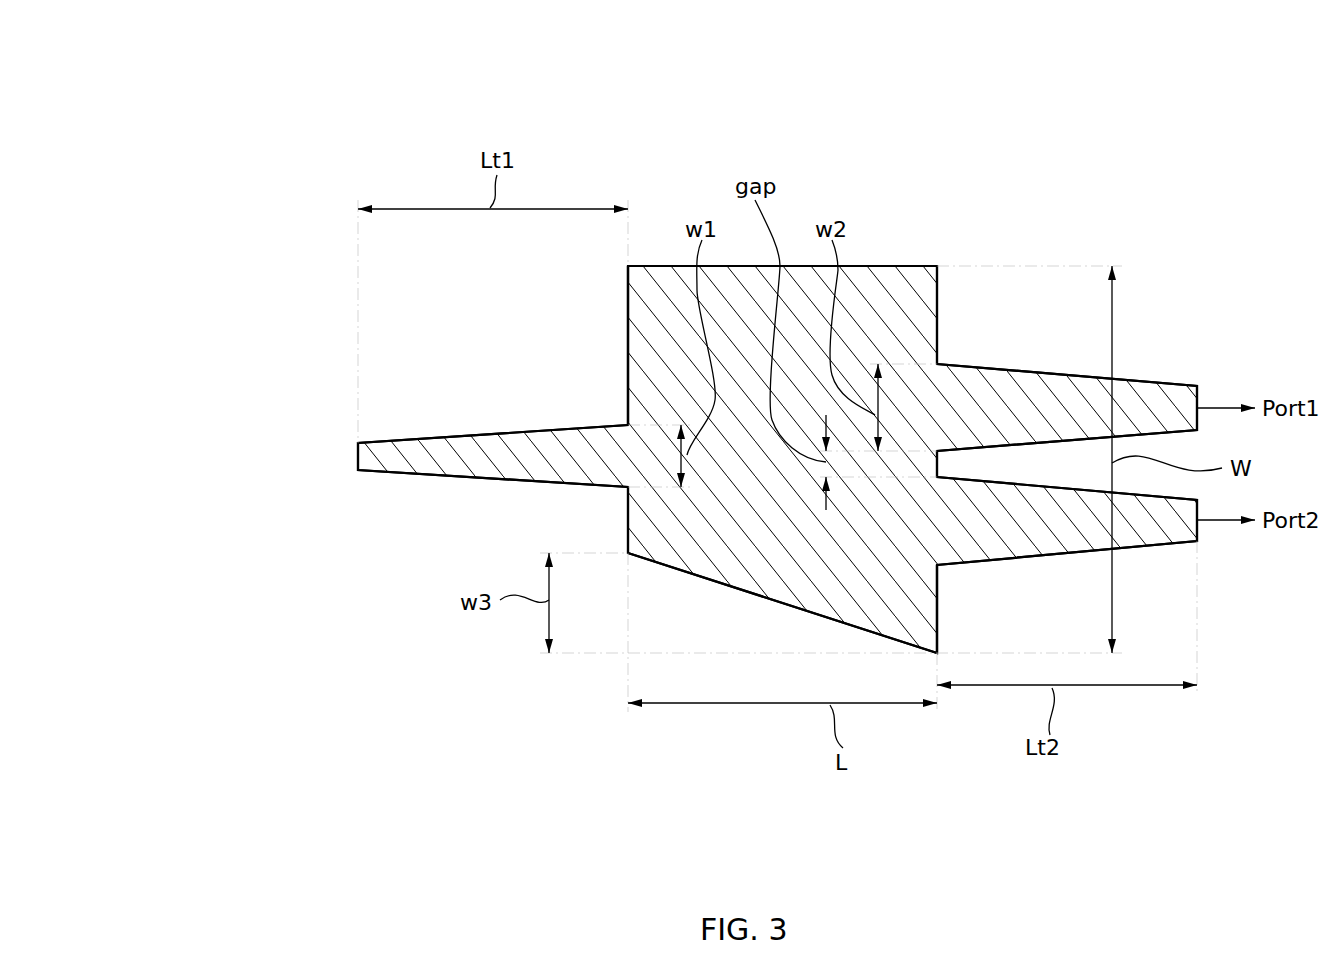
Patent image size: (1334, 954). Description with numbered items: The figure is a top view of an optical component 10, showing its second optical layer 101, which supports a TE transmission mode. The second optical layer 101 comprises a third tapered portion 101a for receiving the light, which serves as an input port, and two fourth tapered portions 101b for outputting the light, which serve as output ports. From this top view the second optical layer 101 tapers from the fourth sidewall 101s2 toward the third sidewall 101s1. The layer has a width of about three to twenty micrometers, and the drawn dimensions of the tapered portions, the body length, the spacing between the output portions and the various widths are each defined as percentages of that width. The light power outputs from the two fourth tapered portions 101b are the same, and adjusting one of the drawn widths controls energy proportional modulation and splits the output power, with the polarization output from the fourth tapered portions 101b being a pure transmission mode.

The optical component 10 is at (108, 75).
The second optical layer 101 is at (787, 558).
The third tapered portion 101a is at (427, 462).
The fourth tapered portions 101b is at (1175, 524).
The third sidewall 101s1 is at (628, 347).
The fourth sidewall 101s2 is at (937, 605).